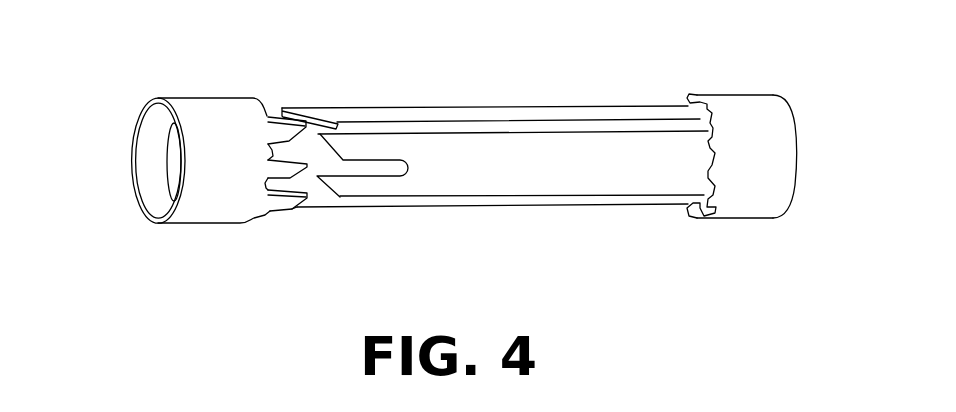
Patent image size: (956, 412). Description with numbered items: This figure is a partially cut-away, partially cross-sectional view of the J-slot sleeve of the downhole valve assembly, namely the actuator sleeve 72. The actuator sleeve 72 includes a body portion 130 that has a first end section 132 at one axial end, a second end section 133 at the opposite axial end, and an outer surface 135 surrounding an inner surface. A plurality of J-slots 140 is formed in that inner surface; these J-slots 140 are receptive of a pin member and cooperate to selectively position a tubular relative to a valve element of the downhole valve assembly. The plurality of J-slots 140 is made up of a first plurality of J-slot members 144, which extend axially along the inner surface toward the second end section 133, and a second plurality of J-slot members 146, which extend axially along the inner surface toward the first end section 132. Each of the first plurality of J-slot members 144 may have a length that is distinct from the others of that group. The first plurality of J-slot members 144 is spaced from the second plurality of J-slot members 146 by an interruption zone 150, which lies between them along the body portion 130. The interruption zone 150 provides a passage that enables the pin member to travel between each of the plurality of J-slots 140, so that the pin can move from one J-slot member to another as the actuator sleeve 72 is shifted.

The actuator sleeve 72 is at (608, 263).
The body portion 130 is at (200, 97).
The first end section 132 is at (146, 110).
The second end section 133 is at (795, 190).
The outer surface 135 is at (742, 107).
The plurality of J-slots 140 is at (380, 228).
The first plurality of J-slot members 144 is at (442, 136).
The second plurality of J-slot members 146 is at (313, 150).
The interruption zone 150 is at (317, 210).